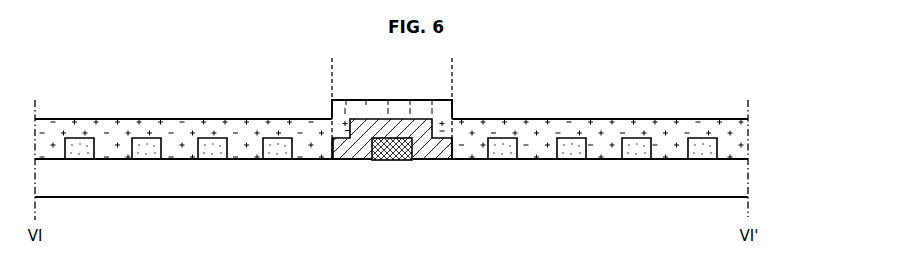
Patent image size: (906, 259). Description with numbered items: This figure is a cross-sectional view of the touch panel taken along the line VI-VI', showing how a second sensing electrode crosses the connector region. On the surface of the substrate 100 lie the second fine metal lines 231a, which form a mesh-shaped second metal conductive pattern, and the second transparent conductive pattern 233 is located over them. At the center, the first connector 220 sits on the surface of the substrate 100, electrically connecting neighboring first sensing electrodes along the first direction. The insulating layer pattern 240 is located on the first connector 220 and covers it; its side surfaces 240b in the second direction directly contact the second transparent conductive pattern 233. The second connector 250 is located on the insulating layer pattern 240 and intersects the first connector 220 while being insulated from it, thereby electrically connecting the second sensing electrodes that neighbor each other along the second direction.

The substrate 100 is at (740, 178).
The second transparent conductive pattern 233 is at (112, 128).
The second fine metal lines 231a is at (146, 150).
The second connector 250 is at (386, 105).
The insulating layer pattern 240 is at (433, 152).
The first connector 220 is at (392, 160).
The side surface of the insulating layer pattern 240b is at (322, 154).